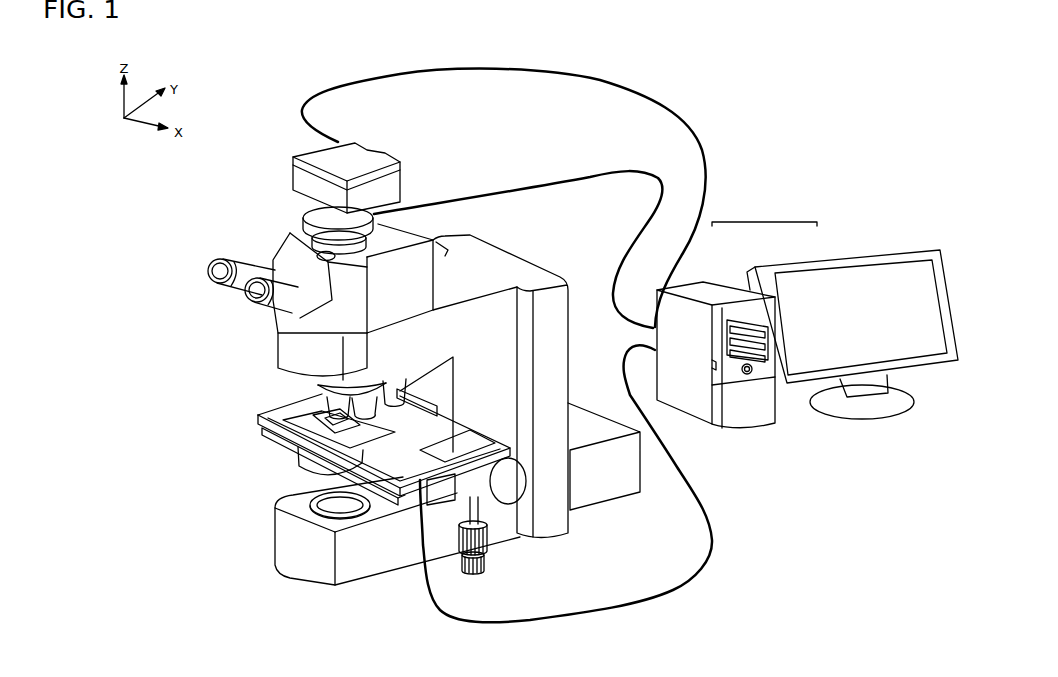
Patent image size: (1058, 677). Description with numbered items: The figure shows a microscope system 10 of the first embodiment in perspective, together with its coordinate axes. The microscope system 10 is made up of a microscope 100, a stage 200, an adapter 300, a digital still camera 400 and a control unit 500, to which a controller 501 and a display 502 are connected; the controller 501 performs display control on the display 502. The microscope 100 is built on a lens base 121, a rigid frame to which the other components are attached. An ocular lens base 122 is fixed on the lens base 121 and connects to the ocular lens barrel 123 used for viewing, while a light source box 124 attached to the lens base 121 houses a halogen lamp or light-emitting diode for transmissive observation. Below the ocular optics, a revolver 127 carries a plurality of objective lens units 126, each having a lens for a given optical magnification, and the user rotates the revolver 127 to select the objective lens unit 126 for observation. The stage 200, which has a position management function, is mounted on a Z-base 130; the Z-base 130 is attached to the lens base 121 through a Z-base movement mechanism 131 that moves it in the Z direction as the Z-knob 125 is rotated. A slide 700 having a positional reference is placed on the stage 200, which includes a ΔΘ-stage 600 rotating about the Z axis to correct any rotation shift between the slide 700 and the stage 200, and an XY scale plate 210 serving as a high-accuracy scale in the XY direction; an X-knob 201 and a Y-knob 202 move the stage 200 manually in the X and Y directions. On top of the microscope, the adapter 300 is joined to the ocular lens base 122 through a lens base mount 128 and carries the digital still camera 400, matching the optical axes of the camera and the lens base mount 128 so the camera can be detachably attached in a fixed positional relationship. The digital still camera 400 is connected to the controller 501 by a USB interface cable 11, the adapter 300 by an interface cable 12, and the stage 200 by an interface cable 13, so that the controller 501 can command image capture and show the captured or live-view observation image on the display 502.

The microscope system 10 is at (239, 81).
The USB interface cable 11 is at (570, 70).
The interface cable 12 is at (563, 177).
The interface cable 13 is at (610, 610).
The microscope 100 is at (210, 347).
The lens base 121 is at (515, 259).
The ocular lens base 122 is at (413, 226).
The ocular lens barrel 123 is at (267, 257).
The light source box 124 is at (606, 503).
The Z-knob 125 is at (503, 500).
The objective lens unit 126 is at (402, 398).
The revolver 127 is at (312, 387).
The lens base mount 128 is at (340, 257).
The Z-base 130 is at (303, 459).
The Z-base movement mechanism 131 is at (430, 393).
The stage 200 is at (260, 419).
The X-knob 201 is at (476, 575).
The Y-knob 202 is at (458, 540).
The XY scale plate 210 is at (465, 438).
The adapter 300 is at (303, 217).
The digital still camera 400 is at (340, 140).
The control unit 500 is at (763, 221).
The controller 501 is at (723, 288).
The display 502 is at (810, 267).
The ΔΘ-stage 600 is at (297, 417).
The slide 700 is at (283, 452).